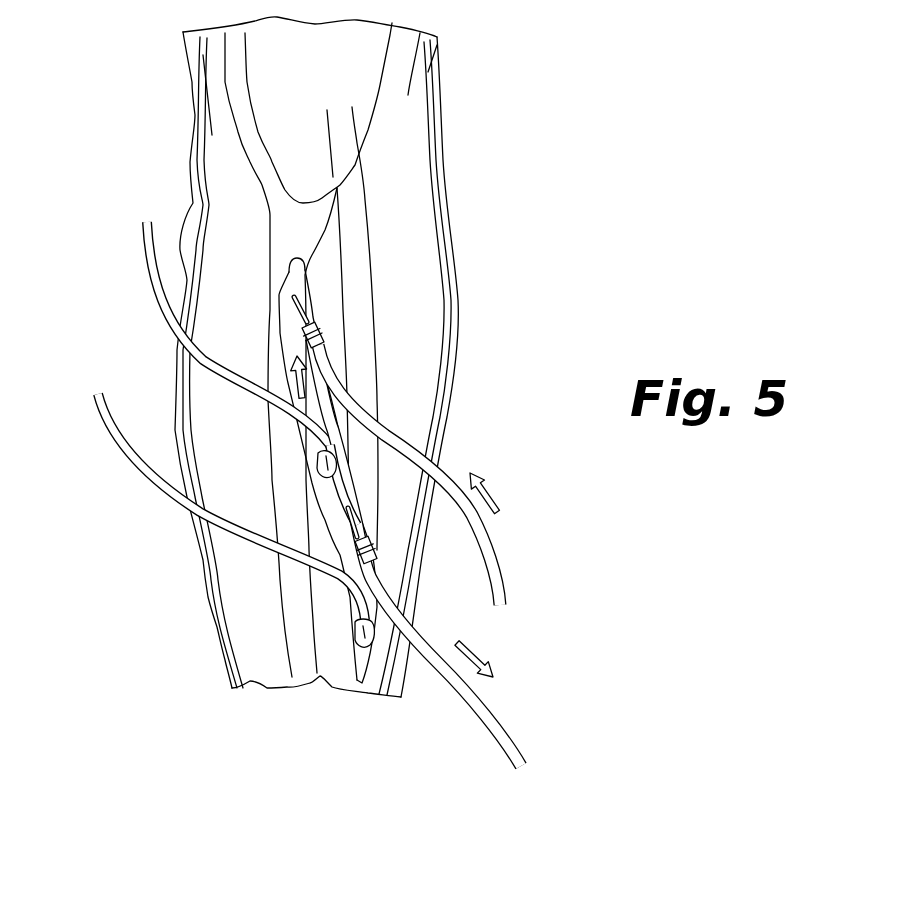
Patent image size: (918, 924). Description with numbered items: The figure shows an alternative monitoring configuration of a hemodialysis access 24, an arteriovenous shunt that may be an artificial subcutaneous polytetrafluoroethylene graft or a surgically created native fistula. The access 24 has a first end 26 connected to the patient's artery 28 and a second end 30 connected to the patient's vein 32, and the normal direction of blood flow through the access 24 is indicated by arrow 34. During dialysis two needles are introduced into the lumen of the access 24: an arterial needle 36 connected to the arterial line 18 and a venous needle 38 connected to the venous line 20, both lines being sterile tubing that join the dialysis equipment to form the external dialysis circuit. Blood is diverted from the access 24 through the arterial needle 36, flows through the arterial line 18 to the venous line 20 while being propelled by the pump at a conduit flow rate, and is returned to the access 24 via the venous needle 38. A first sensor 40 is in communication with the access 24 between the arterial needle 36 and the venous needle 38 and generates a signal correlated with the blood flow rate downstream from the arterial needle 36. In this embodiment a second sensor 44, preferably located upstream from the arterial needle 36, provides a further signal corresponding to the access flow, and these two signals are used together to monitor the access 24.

The arterial line 18 is at (465, 697).
The venous line 20 is at (503, 568).
The access 24 is at (290, 337).
The first end 26 is at (357, 667).
The artery 28 is at (353, 250).
The second end 30 is at (296, 266).
The vein 32 is at (290, 243).
The arrow 34 is at (302, 376).
The arterial needle 36 is at (348, 518).
The venous needle 38 is at (300, 299).
The first sensor 40 is at (333, 455).
The second sensor 44 is at (362, 626).